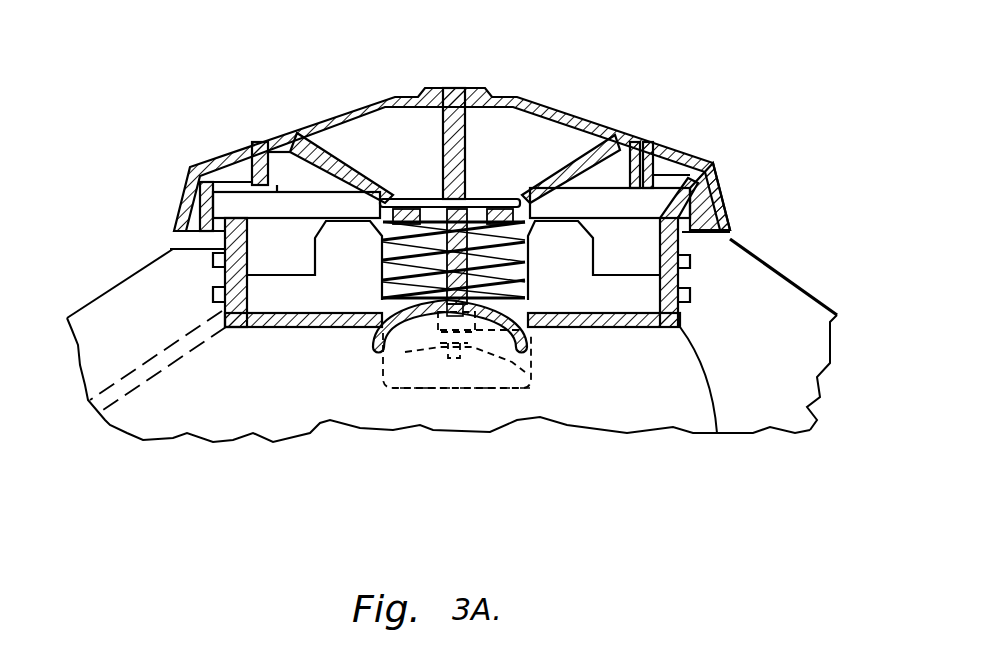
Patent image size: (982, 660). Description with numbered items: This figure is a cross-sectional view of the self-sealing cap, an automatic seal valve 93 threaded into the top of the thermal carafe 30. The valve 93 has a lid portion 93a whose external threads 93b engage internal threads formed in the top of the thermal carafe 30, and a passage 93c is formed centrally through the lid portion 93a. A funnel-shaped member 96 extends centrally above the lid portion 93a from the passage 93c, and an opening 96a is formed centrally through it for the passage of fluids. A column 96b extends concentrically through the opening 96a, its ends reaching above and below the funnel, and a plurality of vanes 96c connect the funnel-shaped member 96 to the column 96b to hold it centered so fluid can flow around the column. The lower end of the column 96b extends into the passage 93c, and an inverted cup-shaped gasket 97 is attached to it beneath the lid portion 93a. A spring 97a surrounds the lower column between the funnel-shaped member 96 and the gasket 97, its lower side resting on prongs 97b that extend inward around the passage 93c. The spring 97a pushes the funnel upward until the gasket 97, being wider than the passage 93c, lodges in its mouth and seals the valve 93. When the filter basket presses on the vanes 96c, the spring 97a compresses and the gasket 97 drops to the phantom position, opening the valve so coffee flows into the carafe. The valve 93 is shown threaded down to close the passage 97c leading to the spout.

The automatic seal valve 93 is at (200, 105).
The lid portion 93a is at (253, 332).
The external threads 93b is at (690, 262).
The passage 93c is at (370, 252).
The funnel-shaped member 96 is at (308, 122).
The opening 96a is at (407, 190).
The column 96b is at (490, 97).
The vanes 96c is at (343, 117).
The gasket 97 is at (425, 378).
The spring 97a is at (503, 222).
The prongs 97b is at (380, 285).
The passage 97c is at (115, 398).
The thermal carafe 30 is at (775, 298).